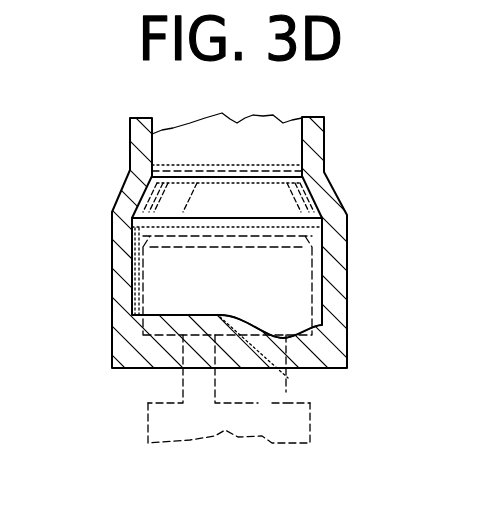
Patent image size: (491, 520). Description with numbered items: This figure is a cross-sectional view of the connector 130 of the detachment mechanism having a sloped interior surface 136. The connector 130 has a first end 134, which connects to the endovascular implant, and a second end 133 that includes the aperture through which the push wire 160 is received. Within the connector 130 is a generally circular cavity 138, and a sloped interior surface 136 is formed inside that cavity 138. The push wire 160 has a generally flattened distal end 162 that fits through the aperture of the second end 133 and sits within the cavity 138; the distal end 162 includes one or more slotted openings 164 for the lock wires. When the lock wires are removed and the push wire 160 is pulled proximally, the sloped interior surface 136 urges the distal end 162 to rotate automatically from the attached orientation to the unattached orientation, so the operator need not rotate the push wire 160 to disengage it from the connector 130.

The connector 130 is at (337, 146).
The second end 133 is at (348, 258).
The first end 134 is at (167, 143).
The sloped interior surface 136 is at (322, 325).
The generally circular cavity 138 is at (134, 295).
The push wire 160 is at (270, 447).
The distal end 162 is at (150, 272).
The slotted openings 164 is at (148, 403).